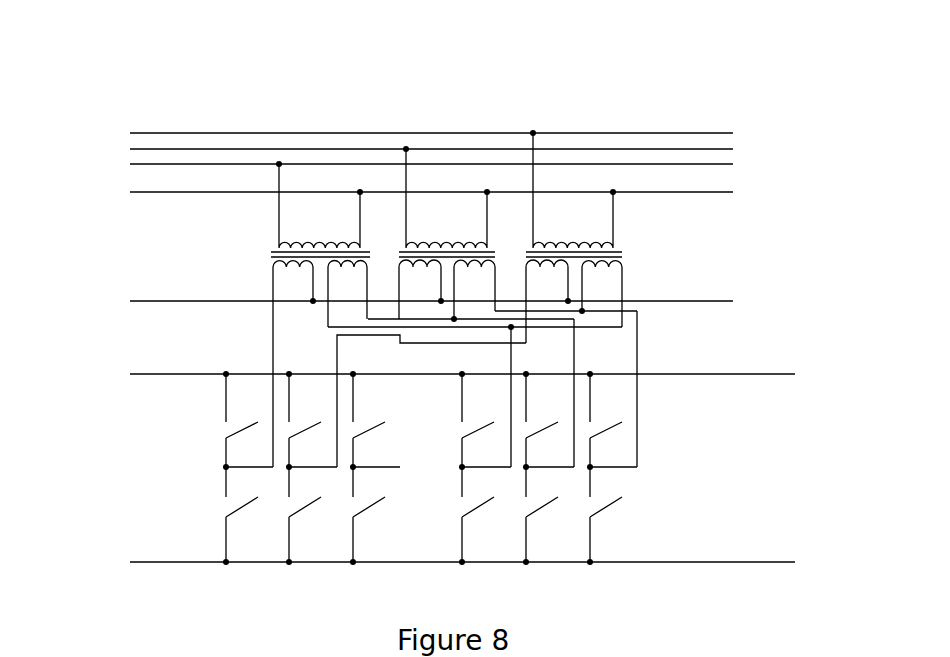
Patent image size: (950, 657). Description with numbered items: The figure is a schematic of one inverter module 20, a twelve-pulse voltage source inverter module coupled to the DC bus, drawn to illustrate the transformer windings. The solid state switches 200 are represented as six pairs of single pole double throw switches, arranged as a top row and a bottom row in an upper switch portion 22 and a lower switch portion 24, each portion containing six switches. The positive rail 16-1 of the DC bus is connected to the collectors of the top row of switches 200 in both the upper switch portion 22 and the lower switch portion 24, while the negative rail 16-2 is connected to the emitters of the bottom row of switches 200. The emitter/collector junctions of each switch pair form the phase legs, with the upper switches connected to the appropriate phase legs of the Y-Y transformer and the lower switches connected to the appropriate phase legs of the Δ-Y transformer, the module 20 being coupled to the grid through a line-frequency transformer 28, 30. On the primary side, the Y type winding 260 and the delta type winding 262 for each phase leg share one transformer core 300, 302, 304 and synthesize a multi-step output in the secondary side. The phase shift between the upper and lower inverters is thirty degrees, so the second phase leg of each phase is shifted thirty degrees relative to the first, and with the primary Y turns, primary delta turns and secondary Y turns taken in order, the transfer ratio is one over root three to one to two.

The inverter module 20 is at (75, 32).
The positive rail 16-1 is at (403, 372).
The negative rail 16-2 is at (402, 561).
The upper switch portion 22 is at (150, 432).
The lower switch portion 24 is at (688, 420).
The switch 200 is at (240, 420).
The line-frequency transformer 28 is at (622, 254).
The line-frequency transformer 30 is at (657, 218).
The Y winding 260 is at (272, 276).
The delta winding 262 is at (325, 276).
The first transformer 300 is at (243, 314).
The second transformer 302 is at (447, 232).
The third transformer 304 is at (574, 236).